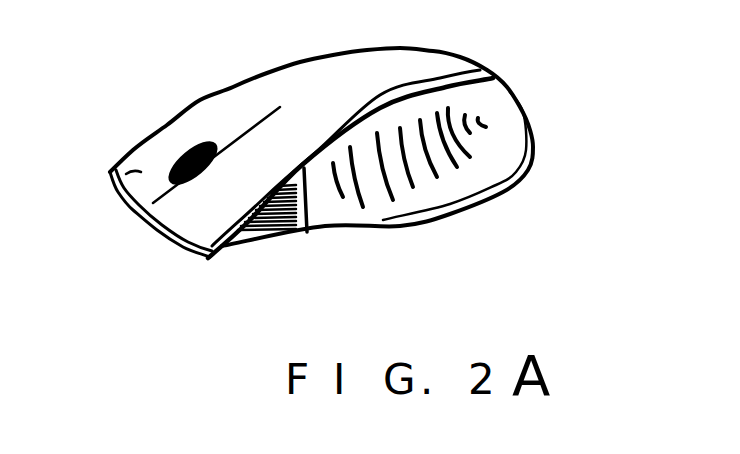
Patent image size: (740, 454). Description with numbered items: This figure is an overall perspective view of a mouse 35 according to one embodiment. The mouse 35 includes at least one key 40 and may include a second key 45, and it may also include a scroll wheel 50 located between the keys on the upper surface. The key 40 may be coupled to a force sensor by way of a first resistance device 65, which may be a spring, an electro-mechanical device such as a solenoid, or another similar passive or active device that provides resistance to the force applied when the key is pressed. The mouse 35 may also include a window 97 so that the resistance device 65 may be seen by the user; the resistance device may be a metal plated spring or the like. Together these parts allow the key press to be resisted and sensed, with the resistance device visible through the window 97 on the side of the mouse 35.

The mouse 35 is at (517, 74).
The second key 45 is at (122, 203).
The key 40 is at (197, 222).
The scroll wheel 50 is at (203, 138).
The first resistance device 65 is at (283, 216).
The window 97 is at (232, 249).